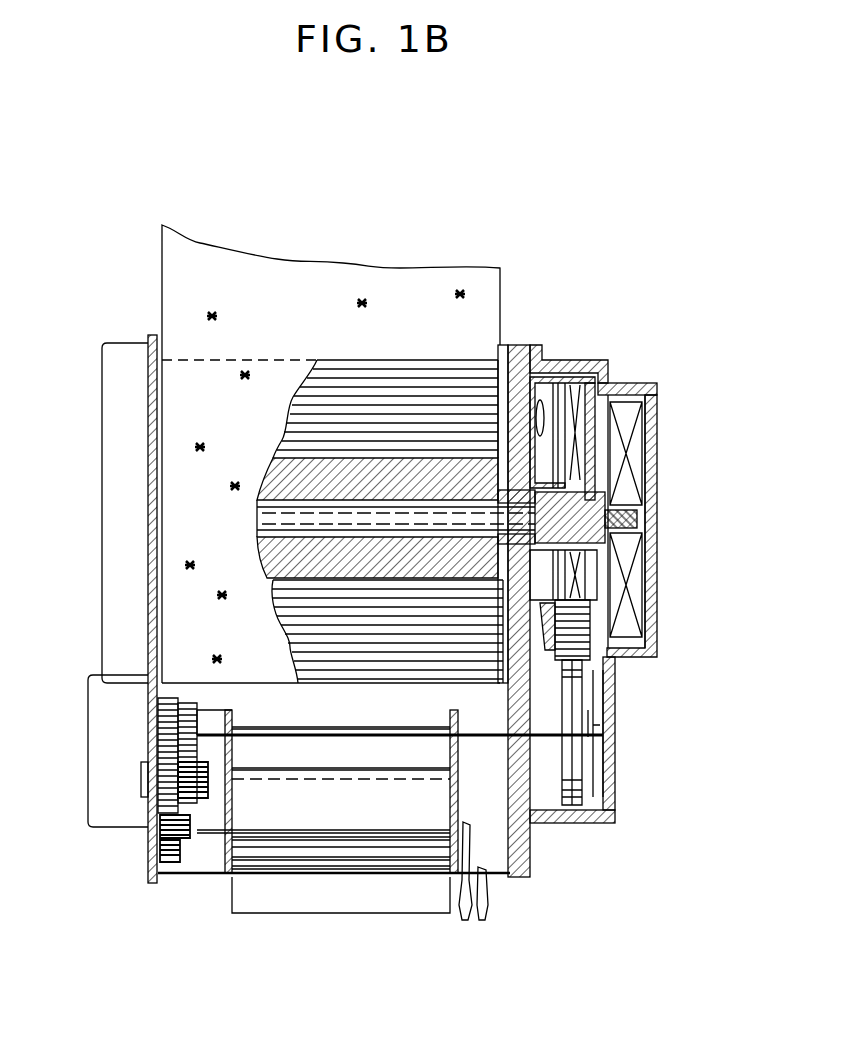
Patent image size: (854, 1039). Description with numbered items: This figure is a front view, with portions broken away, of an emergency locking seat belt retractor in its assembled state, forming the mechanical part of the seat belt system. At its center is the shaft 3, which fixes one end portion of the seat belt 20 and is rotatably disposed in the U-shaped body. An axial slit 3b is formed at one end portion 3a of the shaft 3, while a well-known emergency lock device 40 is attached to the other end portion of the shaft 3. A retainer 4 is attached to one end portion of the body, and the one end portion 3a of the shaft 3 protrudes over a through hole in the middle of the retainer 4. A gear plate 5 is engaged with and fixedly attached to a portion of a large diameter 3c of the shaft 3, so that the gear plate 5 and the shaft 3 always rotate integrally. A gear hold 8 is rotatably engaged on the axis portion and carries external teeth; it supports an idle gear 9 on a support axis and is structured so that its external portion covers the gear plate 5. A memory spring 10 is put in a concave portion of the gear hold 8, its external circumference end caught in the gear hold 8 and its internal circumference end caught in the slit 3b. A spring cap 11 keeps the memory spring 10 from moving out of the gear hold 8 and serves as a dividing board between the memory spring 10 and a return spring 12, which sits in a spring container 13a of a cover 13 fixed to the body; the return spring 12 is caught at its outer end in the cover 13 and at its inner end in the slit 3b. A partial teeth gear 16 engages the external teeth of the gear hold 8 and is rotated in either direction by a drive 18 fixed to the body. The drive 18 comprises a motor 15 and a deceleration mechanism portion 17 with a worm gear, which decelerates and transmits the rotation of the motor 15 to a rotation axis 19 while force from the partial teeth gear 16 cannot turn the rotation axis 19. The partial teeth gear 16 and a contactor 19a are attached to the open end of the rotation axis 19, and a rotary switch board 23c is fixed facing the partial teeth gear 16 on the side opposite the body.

The shaft 3 is at (465, 449).
The one end portion of the shaft 3a is at (605, 493).
The axial slit 3b is at (630, 520).
The portion of a large diameter 3c is at (647, 467).
The retainer 4 is at (507, 880).
The gear plate 5 is at (537, 347).
The gear hold 8 is at (547, 360).
The idle gear 9 is at (557, 603).
The memory spring 10 is at (590, 405).
The spring cap 11 is at (617, 383).
The return spring 12 is at (633, 573).
The cover 13 is at (657, 397).
The spring container 13a is at (627, 425).
The motor 15 is at (303, 843).
The partial teeth gear 16 is at (572, 805).
The deceleration mechanism portion 17 is at (193, 872).
The drive 18 is at (251, 932).
The rotation axis 19 is at (387, 733).
The contactor 19a is at (608, 727).
The seat belt 20 is at (160, 288).
The rotary switch board 23c is at (600, 823).
The emergency lock device 40 is at (120, 475).